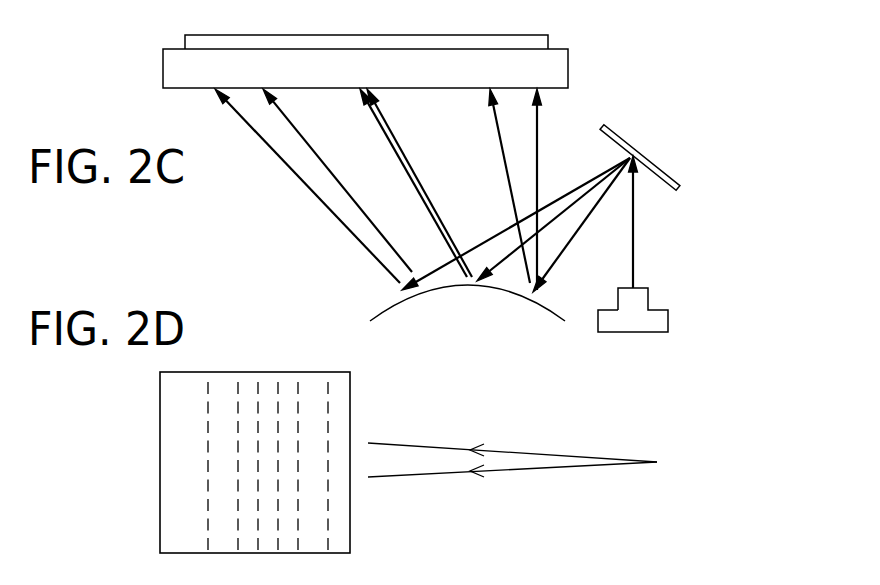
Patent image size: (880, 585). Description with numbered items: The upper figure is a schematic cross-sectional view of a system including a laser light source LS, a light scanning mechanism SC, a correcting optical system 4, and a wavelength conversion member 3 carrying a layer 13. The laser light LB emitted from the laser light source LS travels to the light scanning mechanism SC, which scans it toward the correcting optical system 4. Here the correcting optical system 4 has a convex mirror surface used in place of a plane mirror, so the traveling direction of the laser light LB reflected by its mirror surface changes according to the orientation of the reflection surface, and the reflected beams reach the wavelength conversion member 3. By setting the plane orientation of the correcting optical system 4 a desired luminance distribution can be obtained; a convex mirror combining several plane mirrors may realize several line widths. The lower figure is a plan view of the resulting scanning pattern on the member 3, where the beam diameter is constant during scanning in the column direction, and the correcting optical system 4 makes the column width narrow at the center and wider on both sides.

In FIG. 2C, the substrate 3 is at (556, 72).
In FIG. 2D, the substrate 3 is at (352, 414).
In FIG. 2C, the layer 13 is at (550, 41).
In FIG. 2C, the correcting optical system 4 is at (466, 300).
In FIG. 2C, the light scanning mechanism SC is at (656, 165).
In FIG. 2C, the laser light LB is at (637, 240).
In FIG. 2C, the laser light source LS is at (670, 318).